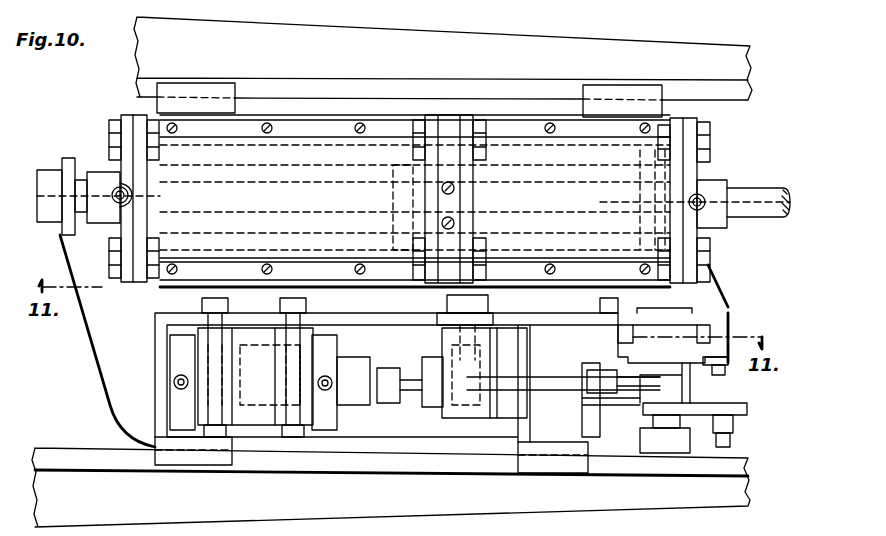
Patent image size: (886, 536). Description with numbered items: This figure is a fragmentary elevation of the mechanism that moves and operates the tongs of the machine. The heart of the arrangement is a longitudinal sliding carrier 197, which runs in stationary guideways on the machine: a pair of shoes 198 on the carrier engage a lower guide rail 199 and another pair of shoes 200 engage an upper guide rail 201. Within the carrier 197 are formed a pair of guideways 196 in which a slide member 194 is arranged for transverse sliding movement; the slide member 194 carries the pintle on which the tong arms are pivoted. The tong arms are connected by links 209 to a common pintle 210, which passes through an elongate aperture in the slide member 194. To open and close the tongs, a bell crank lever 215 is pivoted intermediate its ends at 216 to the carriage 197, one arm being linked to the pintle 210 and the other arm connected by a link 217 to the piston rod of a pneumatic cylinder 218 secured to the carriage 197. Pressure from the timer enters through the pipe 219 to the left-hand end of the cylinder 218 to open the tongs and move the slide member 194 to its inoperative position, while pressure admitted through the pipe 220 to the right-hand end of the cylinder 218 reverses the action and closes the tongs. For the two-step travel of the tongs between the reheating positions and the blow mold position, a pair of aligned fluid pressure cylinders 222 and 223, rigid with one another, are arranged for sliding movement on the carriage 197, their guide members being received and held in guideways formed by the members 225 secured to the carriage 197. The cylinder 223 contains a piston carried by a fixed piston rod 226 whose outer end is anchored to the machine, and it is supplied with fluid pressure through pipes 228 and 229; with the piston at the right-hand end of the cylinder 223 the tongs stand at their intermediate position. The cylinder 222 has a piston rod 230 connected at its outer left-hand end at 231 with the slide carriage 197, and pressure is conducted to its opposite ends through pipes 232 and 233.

The slide member 194 is at (688, 358).
The guideways 196 is at (705, 332).
The carrier 197 is at (345, 322).
The shoes 198 is at (213, 460).
The lower guide rail 199 is at (437, 467).
The shoes 200 is at (220, 90).
The upper guide rail 201 is at (432, 85).
The links 209 is at (627, 412).
The pintle 210 is at (665, 430).
The bell crank lever 215 is at (543, 383).
The pivot 216 is at (490, 347).
The link 217 is at (410, 385).
The pneumatic cylinder 218 is at (262, 424).
The pipe 219 is at (175, 379).
The pipe 220 is at (352, 397).
The fluid pressure cylinder 222 is at (280, 150).
The fluid pressure cylinder 223 is at (518, 157).
The members 225 is at (383, 127).
The fixed piston rod 226 is at (750, 212).
The pipe 228 is at (457, 223).
The pipe 229 is at (710, 192).
The piston rod 230 is at (197, 212).
The connection 231 is at (42, 167).
The pipe 232 is at (124, 187).
The pipe 233 is at (457, 188).